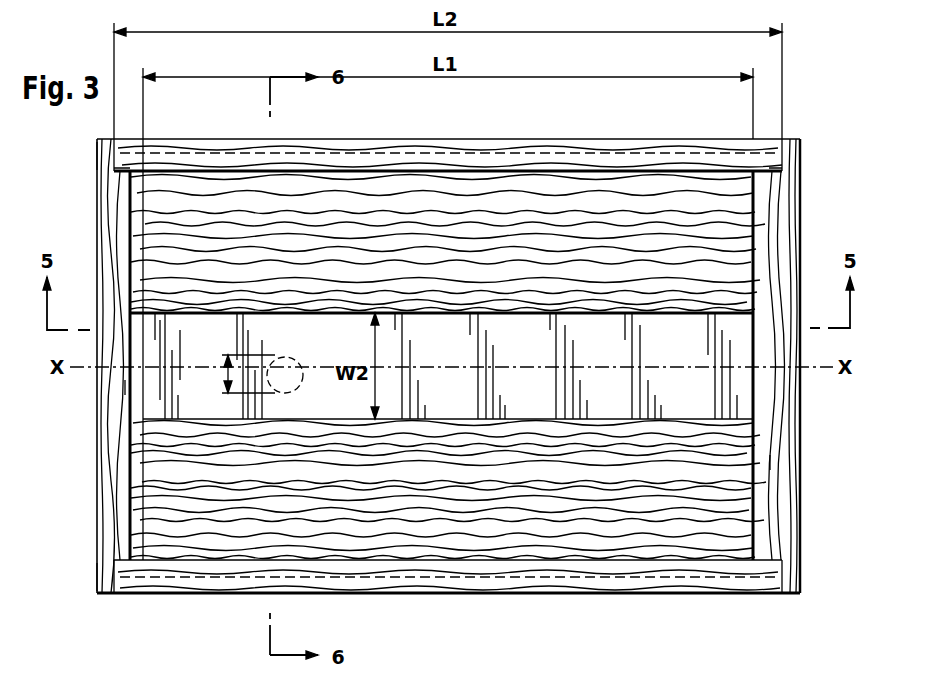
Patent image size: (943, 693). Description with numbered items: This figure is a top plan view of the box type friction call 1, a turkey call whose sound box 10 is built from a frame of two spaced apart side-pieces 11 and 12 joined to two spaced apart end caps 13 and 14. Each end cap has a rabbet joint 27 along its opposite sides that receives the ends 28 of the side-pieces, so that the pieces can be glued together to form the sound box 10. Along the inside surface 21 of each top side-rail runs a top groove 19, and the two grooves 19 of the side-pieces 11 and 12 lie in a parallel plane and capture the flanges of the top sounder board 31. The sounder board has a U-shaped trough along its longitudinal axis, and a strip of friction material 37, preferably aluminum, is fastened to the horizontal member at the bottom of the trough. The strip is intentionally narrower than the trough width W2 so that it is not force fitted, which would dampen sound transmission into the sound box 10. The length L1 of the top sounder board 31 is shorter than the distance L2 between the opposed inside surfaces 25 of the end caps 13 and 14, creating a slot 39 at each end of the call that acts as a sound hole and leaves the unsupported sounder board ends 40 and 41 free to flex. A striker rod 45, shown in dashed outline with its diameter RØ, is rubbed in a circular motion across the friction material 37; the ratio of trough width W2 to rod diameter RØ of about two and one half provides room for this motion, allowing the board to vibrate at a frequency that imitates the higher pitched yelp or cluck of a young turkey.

The friction call 1 is at (720, 630).
The sound box 10 is at (557, 606).
The side-piece 11 is at (653, 577).
The side-piece 12 is at (622, 113).
The end cap 13 is at (107, 492).
The end cap 14 is at (782, 477).
The top groove 19 is at (219, 157).
The inside surface 21 is at (465, 175).
The inside surface 25 is at (133, 392).
The rabbet joint 27 is at (120, 172).
The ends 28 is at (128, 145).
The top sounder board 31 is at (705, 205).
The friction material 37 is at (515, 346).
The slot 39 is at (137, 447).
The unsupported sounder board end 40 is at (745, 263).
The unsupported sounder board end 41 is at (143, 340).
The striker rod 45 is at (292, 362).